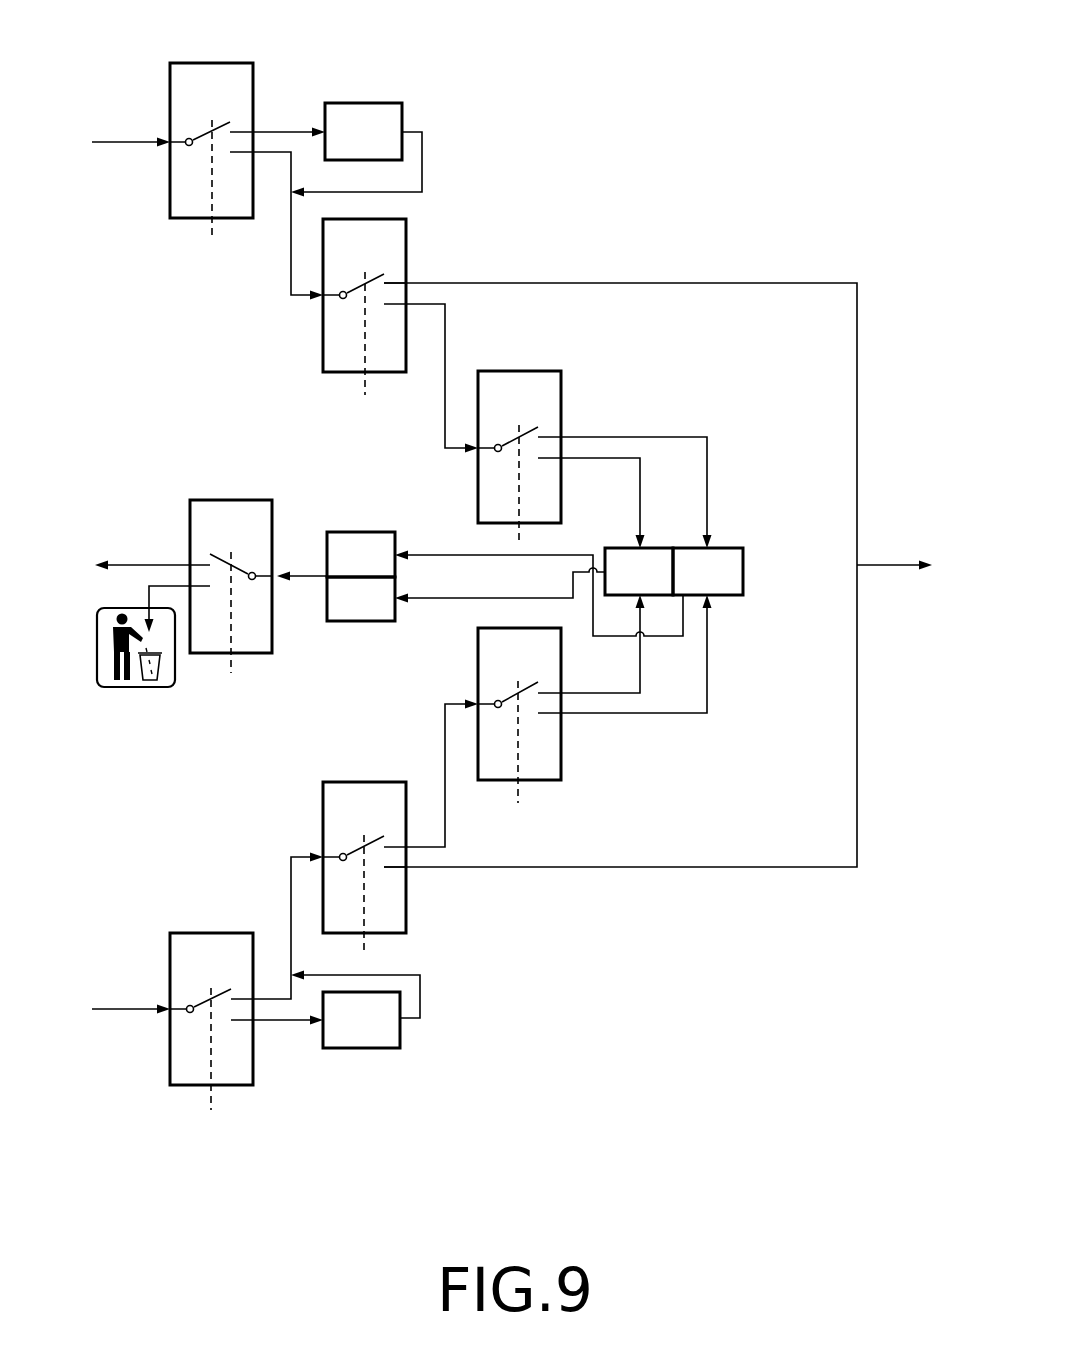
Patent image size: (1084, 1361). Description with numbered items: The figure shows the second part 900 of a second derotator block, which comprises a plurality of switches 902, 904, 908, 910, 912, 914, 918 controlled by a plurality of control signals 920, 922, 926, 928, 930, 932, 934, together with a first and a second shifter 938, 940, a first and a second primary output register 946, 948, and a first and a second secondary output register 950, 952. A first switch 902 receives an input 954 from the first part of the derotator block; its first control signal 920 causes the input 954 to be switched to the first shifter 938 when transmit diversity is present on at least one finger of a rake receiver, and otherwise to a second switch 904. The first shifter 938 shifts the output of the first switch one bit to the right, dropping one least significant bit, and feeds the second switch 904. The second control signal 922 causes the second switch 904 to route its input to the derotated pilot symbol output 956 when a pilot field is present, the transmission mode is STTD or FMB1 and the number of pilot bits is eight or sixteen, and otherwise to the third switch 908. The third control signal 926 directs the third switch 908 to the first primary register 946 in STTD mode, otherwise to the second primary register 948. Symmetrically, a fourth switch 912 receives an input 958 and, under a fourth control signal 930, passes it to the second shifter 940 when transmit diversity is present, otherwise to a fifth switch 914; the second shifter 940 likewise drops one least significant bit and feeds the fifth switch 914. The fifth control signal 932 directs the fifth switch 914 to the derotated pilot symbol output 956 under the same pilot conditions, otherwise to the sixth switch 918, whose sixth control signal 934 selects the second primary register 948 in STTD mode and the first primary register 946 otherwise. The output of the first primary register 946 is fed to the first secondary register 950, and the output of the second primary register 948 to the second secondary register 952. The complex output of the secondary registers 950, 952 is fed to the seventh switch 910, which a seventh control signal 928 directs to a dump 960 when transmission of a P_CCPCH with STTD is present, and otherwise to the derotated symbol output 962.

The second part of the second derotator block 900 is at (688, 217).
The first switch 902 is at (187, 63).
The second switch 904 is at (388, 372).
The third switch 908 is at (538, 371).
The seventh switch 910 is at (205, 500).
The fourth switch 912 is at (185, 933).
The fifth switch 914 is at (340, 782).
The sixth switch 918 is at (562, 745).
The first control signal 920 is at (212, 238).
The second control signal 922 is at (364, 390).
The third control signal 926 is at (517, 540).
The seventh control signal 928 is at (232, 670).
The fourth control signal 930 is at (213, 1100).
The fifth control signal 932 is at (366, 943).
The sixth control signal 934 is at (520, 795).
The first shifter 938 is at (340, 103).
The second shifter 940 is at (357, 1048).
The first primary output register 946 is at (662, 547).
The second primary output register 948 is at (725, 596).
The first secondary output register 950 is at (360, 621).
The second secondary output register 952 is at (340, 532).
The input of the first switch 954 is at (135, 138).
The derotated pilot symbol output 956 is at (887, 562).
The input of the fourth switch 958 is at (112, 1008).
The dump 960 is at (135, 687).
The derotated symbol output 962 is at (135, 562).